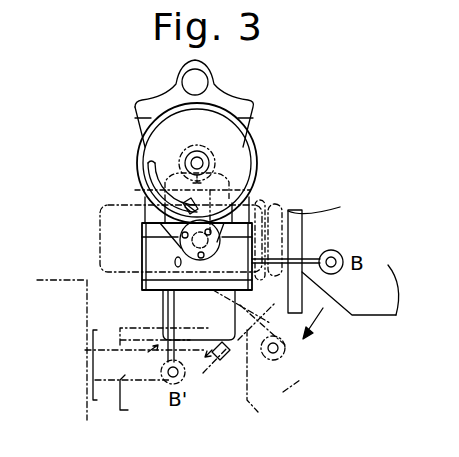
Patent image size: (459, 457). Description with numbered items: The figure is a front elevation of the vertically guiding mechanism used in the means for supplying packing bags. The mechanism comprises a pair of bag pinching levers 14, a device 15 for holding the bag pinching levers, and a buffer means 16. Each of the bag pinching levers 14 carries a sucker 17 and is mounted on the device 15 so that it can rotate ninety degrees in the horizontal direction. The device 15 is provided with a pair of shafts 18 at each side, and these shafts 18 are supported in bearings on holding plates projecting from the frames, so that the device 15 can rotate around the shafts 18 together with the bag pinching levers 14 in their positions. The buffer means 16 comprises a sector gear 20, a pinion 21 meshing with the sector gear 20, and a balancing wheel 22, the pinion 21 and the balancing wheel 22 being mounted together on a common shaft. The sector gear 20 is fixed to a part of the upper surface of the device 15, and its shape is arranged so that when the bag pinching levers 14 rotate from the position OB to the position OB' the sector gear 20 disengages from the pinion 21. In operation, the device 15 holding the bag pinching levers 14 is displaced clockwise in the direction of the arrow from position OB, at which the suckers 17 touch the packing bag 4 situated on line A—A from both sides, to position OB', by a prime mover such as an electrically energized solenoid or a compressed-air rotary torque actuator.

The packing bag 4 is at (368, 303).
The bag pinching levers 14 is at (268, 230).
The device for holding the bag pinching levers 15 is at (140, 236).
The buffer means 16 is at (136, 165).
The sucker 17 is at (338, 252).
The shafts 18 is at (140, 250).
The sector gear 20 is at (218, 160).
The pinion 21 is at (222, 148).
The balancing wheel 22 is at (142, 141).